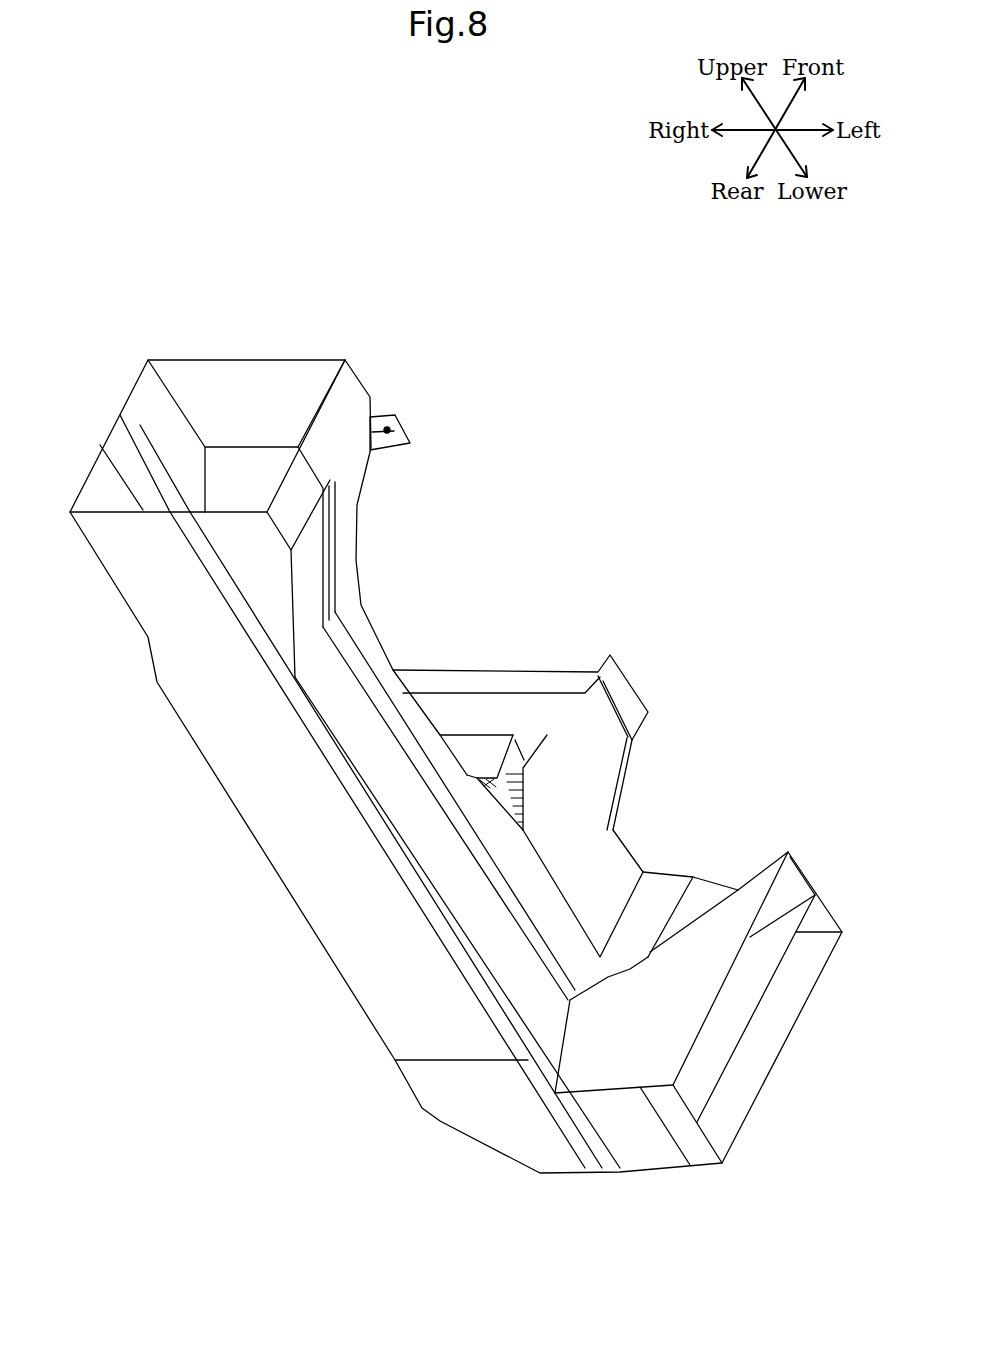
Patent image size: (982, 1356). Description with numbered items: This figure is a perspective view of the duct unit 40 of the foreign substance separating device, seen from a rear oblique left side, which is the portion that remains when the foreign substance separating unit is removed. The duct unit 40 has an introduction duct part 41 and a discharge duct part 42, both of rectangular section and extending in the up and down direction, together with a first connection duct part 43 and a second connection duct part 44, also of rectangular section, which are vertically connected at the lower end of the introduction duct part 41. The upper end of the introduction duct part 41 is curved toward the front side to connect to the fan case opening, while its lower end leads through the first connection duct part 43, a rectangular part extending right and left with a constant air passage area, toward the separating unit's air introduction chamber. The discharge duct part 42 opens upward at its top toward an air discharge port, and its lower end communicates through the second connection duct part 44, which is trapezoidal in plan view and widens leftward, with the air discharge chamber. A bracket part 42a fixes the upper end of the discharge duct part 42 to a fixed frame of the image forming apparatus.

The duct unit 40 is at (185, 320).
The introduction duct part 41 is at (558, 780).
The discharge duct part 42 is at (335, 862).
The bracket part 42a is at (397, 430).
The first connection duct part 43 is at (704, 1148).
The second connection duct part 44 is at (722, 947).